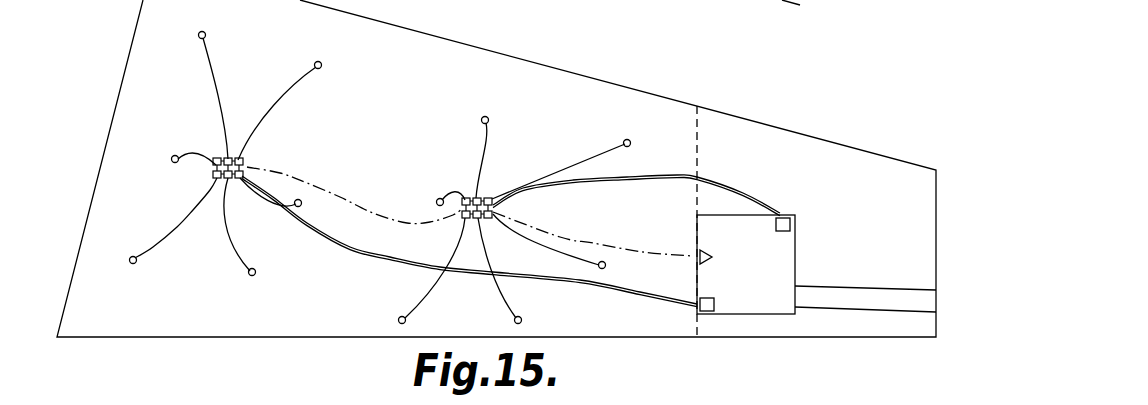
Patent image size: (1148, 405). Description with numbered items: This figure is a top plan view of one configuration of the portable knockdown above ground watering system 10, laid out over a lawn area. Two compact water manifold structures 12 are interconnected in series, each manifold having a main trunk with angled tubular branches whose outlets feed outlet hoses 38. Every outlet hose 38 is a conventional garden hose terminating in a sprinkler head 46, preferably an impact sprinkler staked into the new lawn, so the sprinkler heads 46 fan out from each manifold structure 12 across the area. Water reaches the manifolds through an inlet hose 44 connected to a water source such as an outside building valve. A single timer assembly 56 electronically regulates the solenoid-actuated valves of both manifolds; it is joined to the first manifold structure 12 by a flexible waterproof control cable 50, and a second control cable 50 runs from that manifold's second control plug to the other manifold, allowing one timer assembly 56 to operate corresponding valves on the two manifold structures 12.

The portable knockdown above ground watering system 10 is at (496, 168).
The compact water manifold structure 12 is at (248, 163).
The outlet hose 38 is at (219, 76).
The inlet hose 44 is at (337, 243).
The sprinkler head 46 is at (205, 36).
The flexible waterproof control cable 50 is at (300, 181).
The timer assembly 56 is at (712, 258).